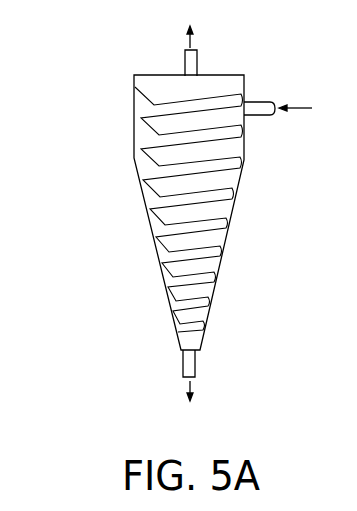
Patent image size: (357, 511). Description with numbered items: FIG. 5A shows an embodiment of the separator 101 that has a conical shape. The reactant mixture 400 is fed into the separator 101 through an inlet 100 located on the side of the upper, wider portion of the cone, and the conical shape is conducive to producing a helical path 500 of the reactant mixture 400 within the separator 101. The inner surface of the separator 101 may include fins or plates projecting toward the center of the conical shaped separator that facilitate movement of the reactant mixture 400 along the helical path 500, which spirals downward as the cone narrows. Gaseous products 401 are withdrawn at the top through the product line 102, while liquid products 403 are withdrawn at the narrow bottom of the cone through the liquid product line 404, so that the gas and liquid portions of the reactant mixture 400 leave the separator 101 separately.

The outlet 100 is at (260, 100).
The separator 101 is at (134, 164).
The product line 102 is at (185, 50).
The reactant mixture 400 is at (291, 112).
The gaseous products 401 is at (196, 36).
The liquid products 403 is at (196, 378).
The liquid product line 404 is at (185, 364).
The helical path 500 is at (134, 89).